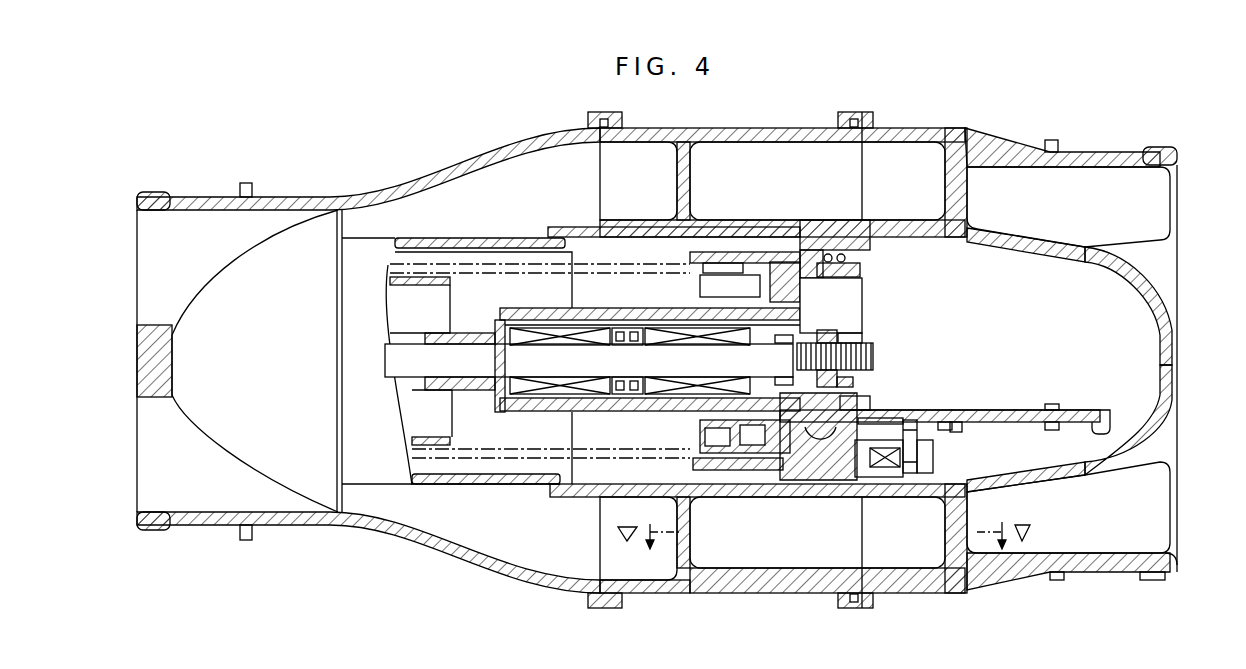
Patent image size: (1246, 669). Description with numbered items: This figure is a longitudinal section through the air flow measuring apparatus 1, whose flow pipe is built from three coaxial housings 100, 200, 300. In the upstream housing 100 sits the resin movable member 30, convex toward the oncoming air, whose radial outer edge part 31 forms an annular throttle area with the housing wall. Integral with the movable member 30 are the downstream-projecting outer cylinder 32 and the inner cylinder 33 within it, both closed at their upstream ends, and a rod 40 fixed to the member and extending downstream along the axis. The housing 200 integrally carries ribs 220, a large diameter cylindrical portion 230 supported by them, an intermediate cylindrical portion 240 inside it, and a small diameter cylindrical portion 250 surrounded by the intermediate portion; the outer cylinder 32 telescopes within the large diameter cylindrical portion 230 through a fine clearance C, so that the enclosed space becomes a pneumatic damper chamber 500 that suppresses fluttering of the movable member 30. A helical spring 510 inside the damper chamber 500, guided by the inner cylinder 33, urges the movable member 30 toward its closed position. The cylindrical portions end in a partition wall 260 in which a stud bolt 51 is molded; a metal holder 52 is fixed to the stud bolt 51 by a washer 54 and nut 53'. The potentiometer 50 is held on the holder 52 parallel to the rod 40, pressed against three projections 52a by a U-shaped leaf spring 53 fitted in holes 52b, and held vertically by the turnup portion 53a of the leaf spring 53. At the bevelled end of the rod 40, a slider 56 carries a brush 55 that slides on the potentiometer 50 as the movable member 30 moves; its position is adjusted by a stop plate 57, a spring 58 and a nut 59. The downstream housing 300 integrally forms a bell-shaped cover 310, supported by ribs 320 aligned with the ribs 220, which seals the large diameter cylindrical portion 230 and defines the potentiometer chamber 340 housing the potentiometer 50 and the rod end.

The marine propulsion unit 1 is at (966, 88).
The movable member 30 is at (210, 284).
The radial outer edge part 31 is at (338, 517).
The outer cylinder 32 is at (496, 240).
The inner cylinder 33 is at (400, 286).
The rod 40 is at (470, 357).
The potentiometer 50 is at (1013, 401).
The stud bolt 51 is at (890, 462).
The metal holder 52 is at (1000, 422).
The projections 52a is at (960, 408).
The holes 52b is at (810, 425).
The U-shaped leaf spring 53 is at (818, 468).
The nut 53' is at (963, 441).
The turnup portion 53a is at (858, 400).
The washer 54 is at (910, 478).
The brush 55 is at (870, 412).
The slider 56 is at (838, 335).
The stop plate 57 is at (778, 378).
The spring 58 is at (814, 333).
The nut 59 is at (848, 338).
The housing 100 is at (385, 526).
The housing 200 is at (738, 594).
The ribs 220 is at (688, 527).
The large diameter cylindrical portion 230 is at (637, 232).
The intermediate cylindrical portion 240 is at (690, 253).
The small diameter cylindrical portion 250 is at (610, 313).
The partition wall 260 is at (797, 312).
The housing 300 is at (961, 596).
The cover 310 is at (1092, 470).
The ribs 320 is at (965, 190).
The potentiometer chamber 340 is at (1093, 277).
The pneumatic damper chamber 500 is at (508, 435).
The helical spring 510 is at (504, 268).
The clearance C is at (547, 487).